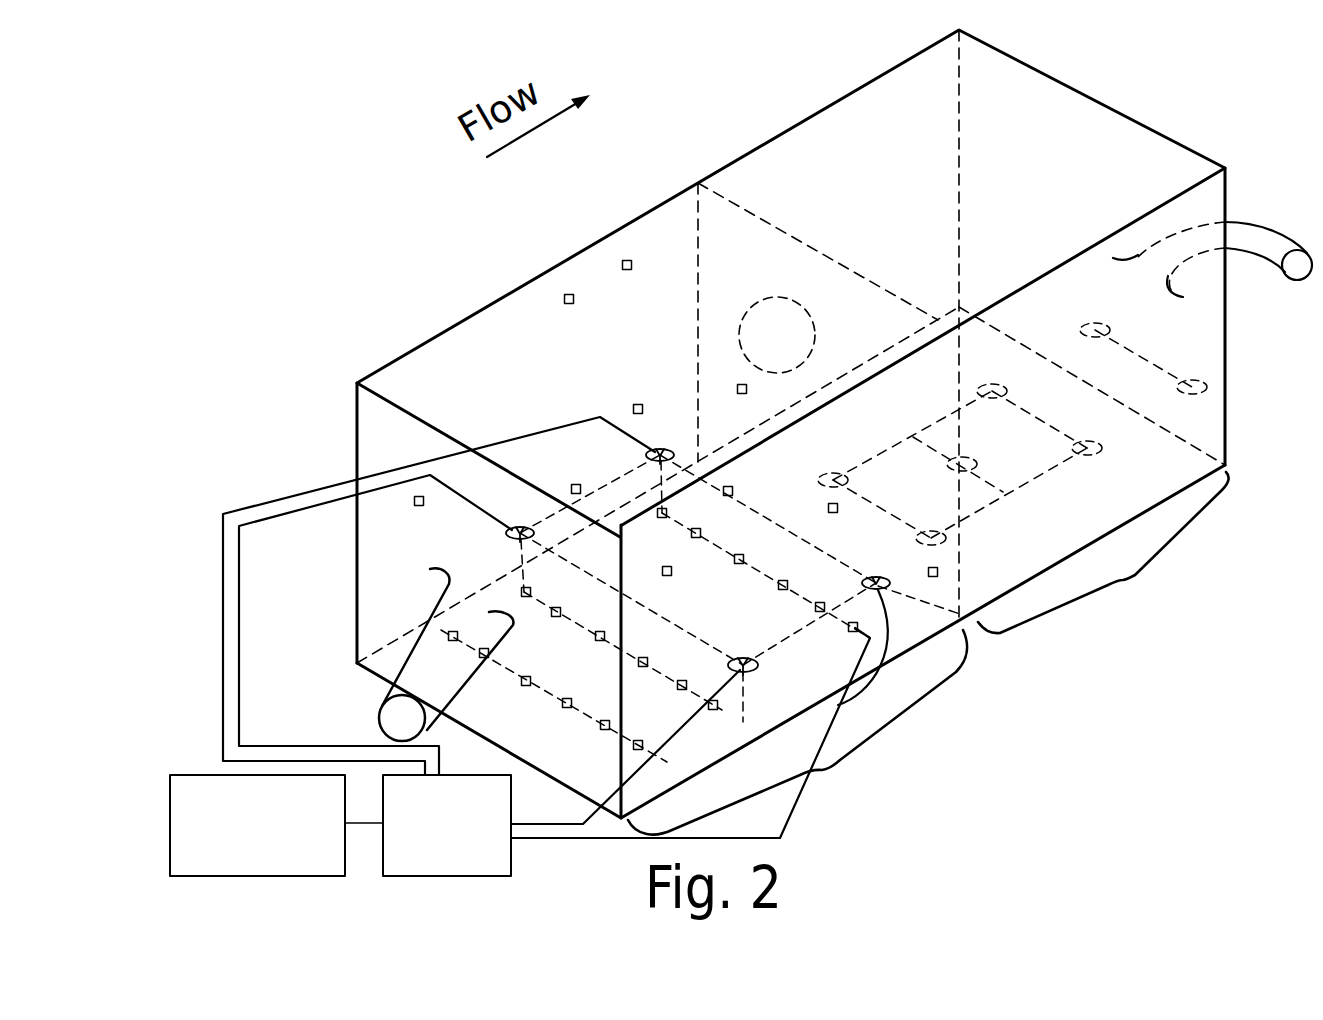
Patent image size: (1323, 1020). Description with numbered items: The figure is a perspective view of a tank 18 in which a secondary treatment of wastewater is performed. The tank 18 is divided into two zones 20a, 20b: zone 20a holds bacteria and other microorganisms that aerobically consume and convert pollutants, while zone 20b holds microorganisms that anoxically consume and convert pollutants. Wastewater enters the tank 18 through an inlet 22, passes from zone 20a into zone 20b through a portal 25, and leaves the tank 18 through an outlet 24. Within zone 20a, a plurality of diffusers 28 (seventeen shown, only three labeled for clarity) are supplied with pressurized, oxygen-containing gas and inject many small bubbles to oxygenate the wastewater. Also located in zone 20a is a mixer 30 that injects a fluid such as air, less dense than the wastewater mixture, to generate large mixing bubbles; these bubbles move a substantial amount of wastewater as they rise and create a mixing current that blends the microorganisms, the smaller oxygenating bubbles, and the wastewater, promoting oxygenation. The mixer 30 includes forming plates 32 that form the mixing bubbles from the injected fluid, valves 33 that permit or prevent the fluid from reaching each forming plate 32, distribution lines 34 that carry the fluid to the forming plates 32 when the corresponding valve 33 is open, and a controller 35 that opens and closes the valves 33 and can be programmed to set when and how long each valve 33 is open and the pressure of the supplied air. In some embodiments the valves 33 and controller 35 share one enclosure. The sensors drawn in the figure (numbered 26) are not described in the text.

The tank 18 is at (780, 95).
The zone 20a is at (932, 724).
The zone 20b is at (1117, 627).
The inlet 22 is at (380, 716).
The outlet 24 is at (1247, 220).
The portal 25 is at (792, 297).
The sensors 26 is at (627, 260).
The diffusers 28 is at (528, 684).
The mixer 30 is at (902, 596).
The forming plate 32 is at (877, 578).
The valve 33 is at (513, 846).
The distribution line 34 is at (306, 761).
The controller 35 is at (204, 775).